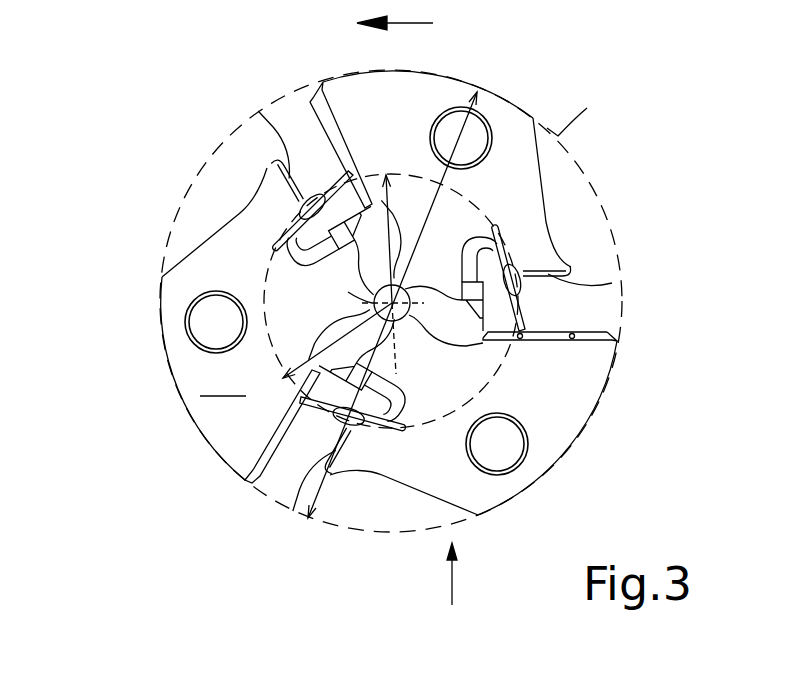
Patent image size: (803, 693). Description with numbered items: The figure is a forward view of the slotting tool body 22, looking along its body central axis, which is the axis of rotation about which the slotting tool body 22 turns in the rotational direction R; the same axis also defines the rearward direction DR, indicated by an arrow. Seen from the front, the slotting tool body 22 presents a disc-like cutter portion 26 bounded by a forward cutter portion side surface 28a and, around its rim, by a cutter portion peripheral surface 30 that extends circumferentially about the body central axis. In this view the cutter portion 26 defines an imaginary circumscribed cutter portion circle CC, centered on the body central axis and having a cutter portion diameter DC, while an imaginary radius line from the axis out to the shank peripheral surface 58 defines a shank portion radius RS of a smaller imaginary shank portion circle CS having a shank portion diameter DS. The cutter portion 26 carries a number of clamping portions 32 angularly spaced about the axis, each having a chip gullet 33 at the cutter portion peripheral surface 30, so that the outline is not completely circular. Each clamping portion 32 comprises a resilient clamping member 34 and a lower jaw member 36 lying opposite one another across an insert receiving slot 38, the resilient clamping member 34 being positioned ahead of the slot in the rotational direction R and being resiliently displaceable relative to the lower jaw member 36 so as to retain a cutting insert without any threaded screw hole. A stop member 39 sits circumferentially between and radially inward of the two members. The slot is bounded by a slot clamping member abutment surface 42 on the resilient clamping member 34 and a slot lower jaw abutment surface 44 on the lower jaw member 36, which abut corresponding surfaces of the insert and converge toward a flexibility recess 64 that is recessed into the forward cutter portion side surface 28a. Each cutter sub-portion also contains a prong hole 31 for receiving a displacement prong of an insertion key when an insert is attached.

The slotting tool body 22 is at (443, 313).
The cutter portion 26 is at (177, 152).
The forward cutter portion side surface 28a is at (223, 383).
The cutter portion peripheral surface 30 is at (596, 420).
The prong hole 31 is at (492, 137).
The clamping portion 32 is at (190, 88).
The chip gullet 33 is at (207, 209).
The resilient clamping member 34 is at (537, 262).
The lower jaw member 36 is at (588, 363).
The insert receiving slot 38 is at (600, 307).
The stop member 39 is at (446, 281).
The slot clamping member abutment surface 42 is at (612, 283).
The slot lower jaw abutment surface 44 is at (608, 331).
The shank peripheral surface 58 is at (330, 177).
The flexibility recess 64 is at (407, 325).
The cutter portion circle CC is at (578, 110).
The shank portion circle CS is at (512, 376).
The cutter portion diameter DC is at (305, 510).
The shank portion diameter DS is at (396, 360).
The shank portion radius RS is at (333, 340).
The rotational direction R is at (404, 24).
The rearward direction DR is at (467, 593).